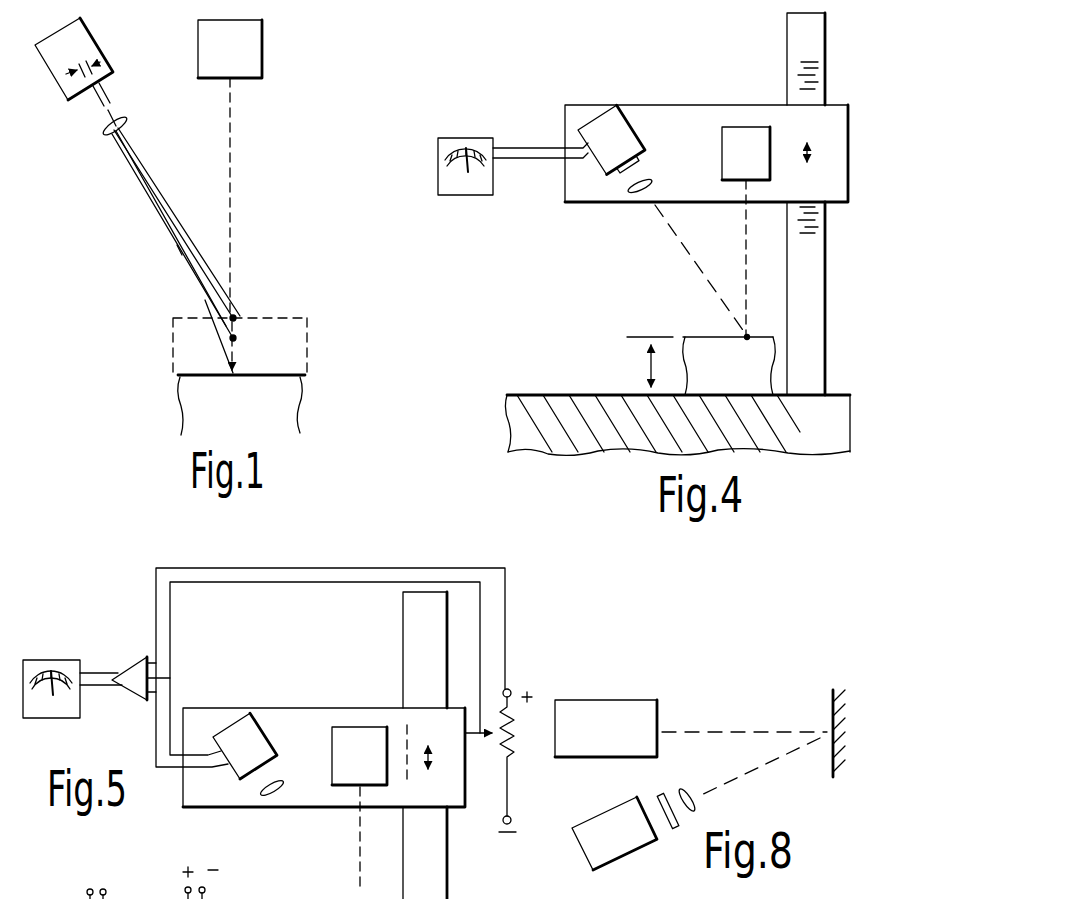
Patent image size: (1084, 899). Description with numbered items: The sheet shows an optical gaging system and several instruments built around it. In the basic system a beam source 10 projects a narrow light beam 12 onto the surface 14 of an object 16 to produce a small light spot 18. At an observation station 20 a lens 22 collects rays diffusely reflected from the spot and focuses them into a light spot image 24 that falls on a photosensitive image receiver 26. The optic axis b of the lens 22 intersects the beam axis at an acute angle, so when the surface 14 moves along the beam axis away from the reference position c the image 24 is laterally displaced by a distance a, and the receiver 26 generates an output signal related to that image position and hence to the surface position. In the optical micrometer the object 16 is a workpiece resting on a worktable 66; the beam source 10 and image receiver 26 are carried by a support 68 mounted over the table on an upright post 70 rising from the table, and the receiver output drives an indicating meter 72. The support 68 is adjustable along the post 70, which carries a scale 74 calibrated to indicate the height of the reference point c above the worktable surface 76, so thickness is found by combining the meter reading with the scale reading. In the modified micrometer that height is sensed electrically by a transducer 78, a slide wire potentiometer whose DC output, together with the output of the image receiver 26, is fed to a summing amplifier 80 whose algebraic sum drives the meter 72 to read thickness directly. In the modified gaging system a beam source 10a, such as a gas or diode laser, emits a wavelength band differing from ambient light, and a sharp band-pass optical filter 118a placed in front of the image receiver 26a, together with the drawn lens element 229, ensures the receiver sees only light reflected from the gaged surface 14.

In FIG. 1, the beam source 10 is at (236, 58).
In FIG. 4, the beam source 10 is at (755, 161).
In FIG. 5, the beam source 10 is at (369, 763).
In FIG. 8, the beam source 10a is at (627, 743).
In FIG. 1, the light beam 12 is at (233, 193).
In FIG. 4, the light beam 12 is at (743, 213).
In FIG. 1, the surface 14 is at (273, 313).
In FIG. 4, the surface 14 is at (703, 336).
In FIG. 8, the surface 14 is at (830, 705).
In FIG. 1, the object 16 is at (246, 411).
In FIG. 4, the object 16 is at (742, 374).
In FIG. 1, the light spot 18 is at (240, 312).
In FIG. 4, the light spot 18 is at (752, 343).
In FIG. 1, the observation station 20 is at (152, 12).
In FIG. 4, the observation station 20 is at (646, 120).
In FIG. 1, the lens 22 is at (105, 132).
In FIG. 4, the lens 22 is at (649, 183).
In FIG. 5, the lens 22 is at (284, 778).
In FIG. 1, the light spot image 24 is at (107, 83).
In FIG. 4, the light spot image 24 is at (633, 168).
In FIG. 1, the photosensitive image receiver 26 is at (72, 65).
In FIG. 4, the photosensitive image receiver 26 is at (620, 149).
In FIG. 5, the photosensitive image receiver 26 is at (254, 756).
In FIG. 8, the image receiver 26a is at (638, 851).
In FIG. 4, the worktable 66 is at (507, 412).
In FIG. 4, the support 68 is at (578, 104).
In FIG. 4, the upright post 70 is at (787, 38).
In FIG. 4, the indicating meter 72 is at (512, 104).
In FIG. 5, the indicating meter 72 is at (53, 660).
In FIG. 4, the scale 74 is at (829, 232).
In FIG. 4, the worktable surface 76 is at (566, 368).
In FIG. 5, the transducer 78 is at (523, 747).
In FIG. 5, the summing amplifier 80 is at (133, 632).
In FIG. 8, the band-pass optical filter 118a is at (680, 825).
In FIG. 8, the lens 229 is at (685, 790).
In FIG. 1, the lateral displacement a is at (76, 71).
In FIG. 1, the optic axis b is at (180, 257).
In FIG. 4, the optic axis b is at (650, 222).
In FIG. 1, the reference position c is at (233, 341).
In FIG. 4, the reference position c is at (746, 338).